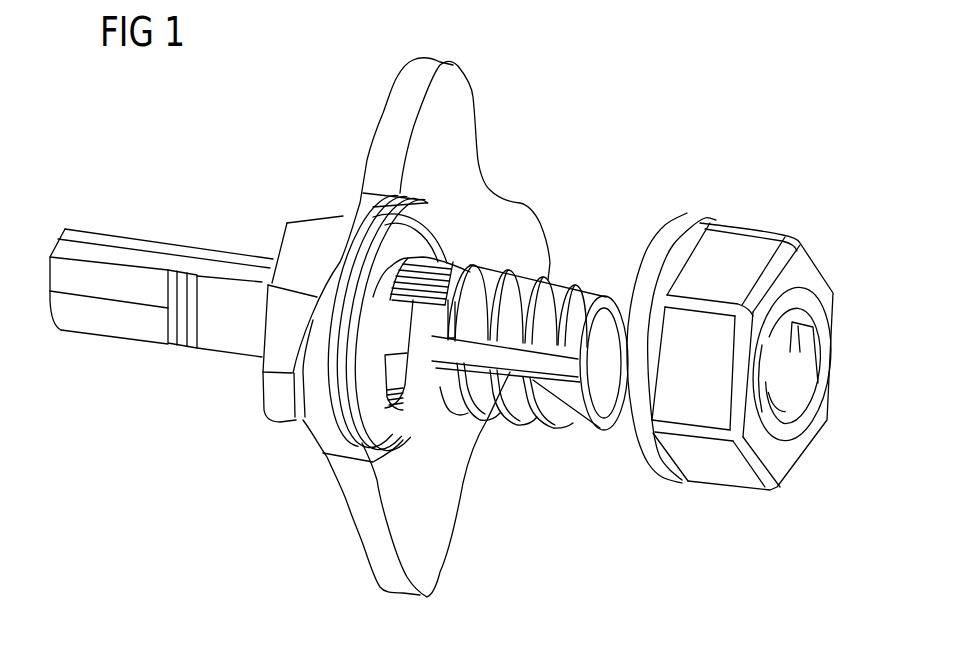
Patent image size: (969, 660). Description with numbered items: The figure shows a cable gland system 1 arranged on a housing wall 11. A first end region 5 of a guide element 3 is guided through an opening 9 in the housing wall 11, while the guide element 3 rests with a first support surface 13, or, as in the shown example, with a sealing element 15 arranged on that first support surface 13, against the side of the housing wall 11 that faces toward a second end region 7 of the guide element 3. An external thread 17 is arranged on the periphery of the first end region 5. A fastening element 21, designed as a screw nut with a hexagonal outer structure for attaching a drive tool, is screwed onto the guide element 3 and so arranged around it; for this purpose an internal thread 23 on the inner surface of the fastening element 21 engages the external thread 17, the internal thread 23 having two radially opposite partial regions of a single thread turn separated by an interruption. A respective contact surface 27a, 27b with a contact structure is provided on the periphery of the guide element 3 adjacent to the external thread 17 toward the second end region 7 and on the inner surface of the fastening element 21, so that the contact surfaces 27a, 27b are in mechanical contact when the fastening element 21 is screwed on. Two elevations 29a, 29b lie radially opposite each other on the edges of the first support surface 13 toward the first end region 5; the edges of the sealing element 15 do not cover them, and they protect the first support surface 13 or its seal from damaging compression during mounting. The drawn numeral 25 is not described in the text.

The cable gland system 1 is at (632, 160).
The guide element 3 is at (208, 383).
The first end region 5 is at (539, 447).
The second end region 7 is at (92, 320).
The opening 9 is at (447, 262).
The housing wall 11 is at (453, 127).
The first support surface 13 is at (357, 420).
The sealing element 15 is at (390, 418).
The external thread 17 is at (552, 282).
The fastening element 21 is at (733, 250).
The internal thread 23 is at (797, 357).
The nut flange 25 is at (673, 223).
The contact surface 27a is at (759, 375).
The contact surface 27b is at (455, 285).
The elevation 29a is at (372, 453).
The elevation 29b is at (400, 197).